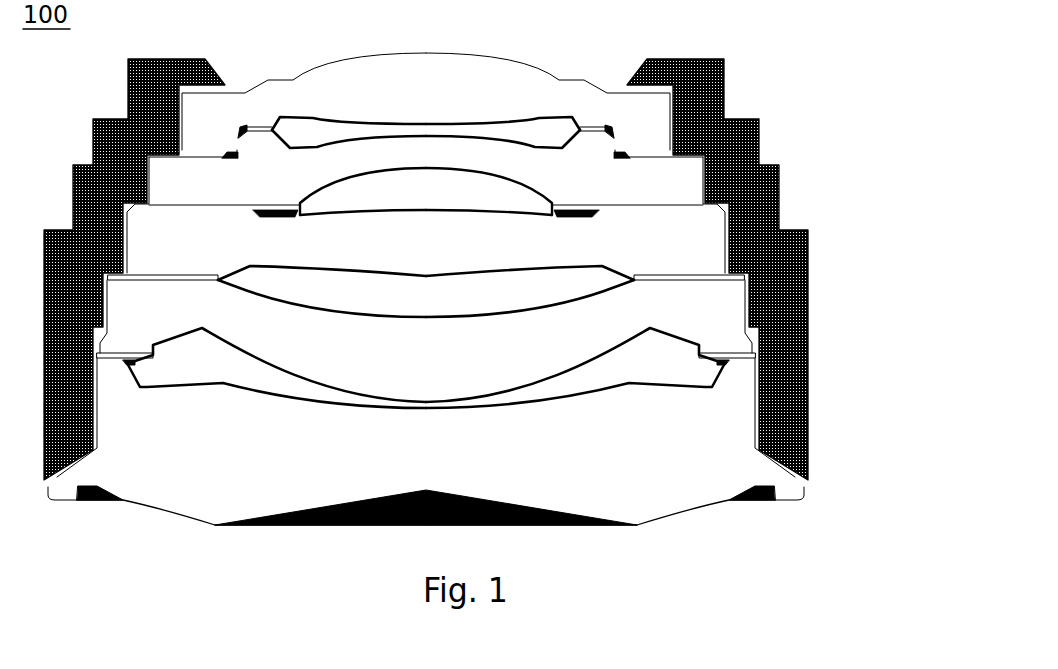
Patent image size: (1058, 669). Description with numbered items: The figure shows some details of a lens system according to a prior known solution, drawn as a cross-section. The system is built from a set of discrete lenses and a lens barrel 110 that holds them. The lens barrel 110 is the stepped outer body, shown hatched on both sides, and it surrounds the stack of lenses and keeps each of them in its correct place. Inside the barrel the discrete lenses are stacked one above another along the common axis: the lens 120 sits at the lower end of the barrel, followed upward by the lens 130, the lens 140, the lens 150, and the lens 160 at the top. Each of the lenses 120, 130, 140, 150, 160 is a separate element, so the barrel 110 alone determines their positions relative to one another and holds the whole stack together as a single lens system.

The lens barrel 110 is at (807, 272).
The lens 120 is at (426, 481).
The lens 130 is at (426, 351).
The lens 140 is at (463, 273).
The lens 150 is at (490, 191).
The lens 160 is at (448, 128).